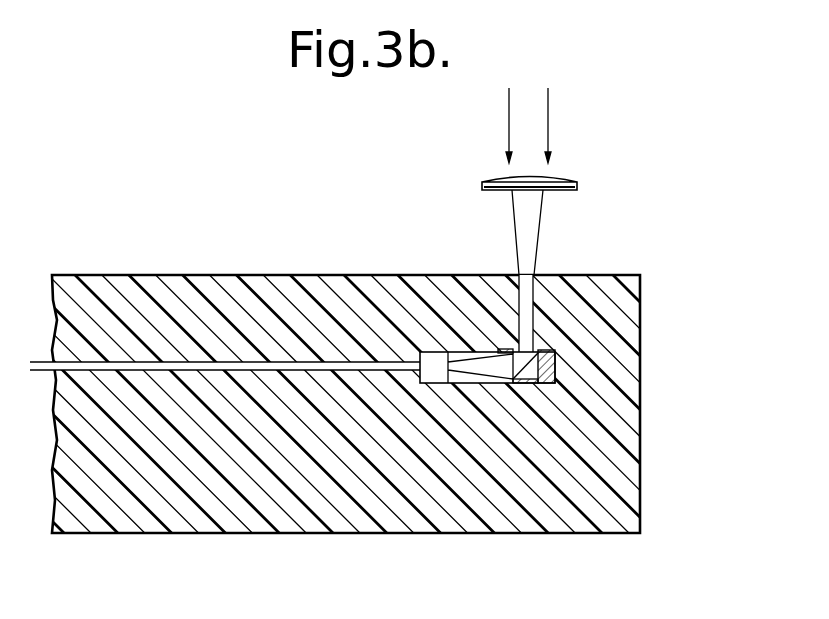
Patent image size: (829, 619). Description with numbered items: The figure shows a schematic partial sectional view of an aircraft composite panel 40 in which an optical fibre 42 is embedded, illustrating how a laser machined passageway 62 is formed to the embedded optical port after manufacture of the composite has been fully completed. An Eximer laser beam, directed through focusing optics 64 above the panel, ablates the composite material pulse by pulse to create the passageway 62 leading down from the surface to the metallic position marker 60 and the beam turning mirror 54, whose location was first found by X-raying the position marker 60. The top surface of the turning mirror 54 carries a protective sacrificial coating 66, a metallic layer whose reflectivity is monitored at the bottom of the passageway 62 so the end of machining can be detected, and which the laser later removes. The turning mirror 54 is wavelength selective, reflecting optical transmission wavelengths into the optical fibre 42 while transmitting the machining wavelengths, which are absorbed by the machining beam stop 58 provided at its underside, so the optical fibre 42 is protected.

The composite panel 40 is at (347, 512).
The embedded optical fibre 42 is at (205, 362).
The beam turning mirror 54 is at (543, 387).
The machining beam stop 58 is at (524, 350).
The metallic position marker 60 is at (553, 362).
The passageway 62 is at (527, 277).
The focusing optics 64 is at (479, 181).
The protective sacrificial coating 66 is at (537, 357).